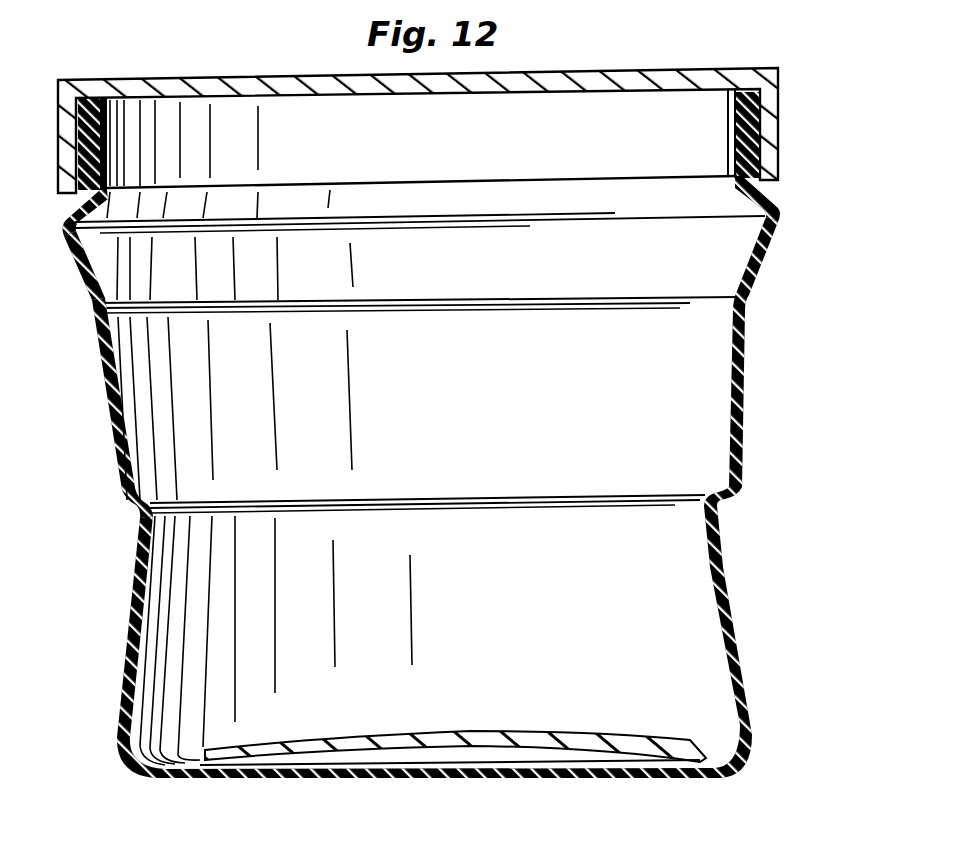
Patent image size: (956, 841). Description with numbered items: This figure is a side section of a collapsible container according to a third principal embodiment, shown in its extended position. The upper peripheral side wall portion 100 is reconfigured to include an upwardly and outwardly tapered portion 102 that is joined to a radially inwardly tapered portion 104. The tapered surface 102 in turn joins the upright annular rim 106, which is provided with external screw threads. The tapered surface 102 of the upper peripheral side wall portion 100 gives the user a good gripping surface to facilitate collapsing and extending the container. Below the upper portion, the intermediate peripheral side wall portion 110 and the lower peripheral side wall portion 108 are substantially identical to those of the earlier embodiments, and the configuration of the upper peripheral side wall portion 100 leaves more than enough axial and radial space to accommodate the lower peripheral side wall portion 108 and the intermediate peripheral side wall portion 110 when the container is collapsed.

The upper peripheral side wall portion 100 is at (76, 282).
The upwardly and outwardly tapered portion 102 is at (771, 252).
The radially inwardly tapered portion 104 is at (770, 198).
The upright annular rim 106 is at (757, 95).
The lower peripheral side wall portion 108 is at (737, 630).
The intermediate peripheral side wall portion 110 is at (741, 433).